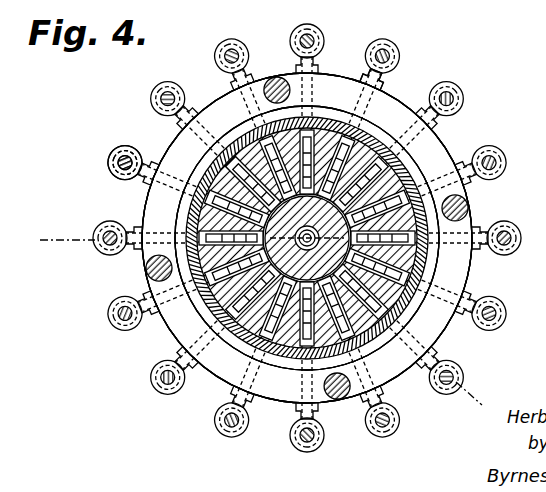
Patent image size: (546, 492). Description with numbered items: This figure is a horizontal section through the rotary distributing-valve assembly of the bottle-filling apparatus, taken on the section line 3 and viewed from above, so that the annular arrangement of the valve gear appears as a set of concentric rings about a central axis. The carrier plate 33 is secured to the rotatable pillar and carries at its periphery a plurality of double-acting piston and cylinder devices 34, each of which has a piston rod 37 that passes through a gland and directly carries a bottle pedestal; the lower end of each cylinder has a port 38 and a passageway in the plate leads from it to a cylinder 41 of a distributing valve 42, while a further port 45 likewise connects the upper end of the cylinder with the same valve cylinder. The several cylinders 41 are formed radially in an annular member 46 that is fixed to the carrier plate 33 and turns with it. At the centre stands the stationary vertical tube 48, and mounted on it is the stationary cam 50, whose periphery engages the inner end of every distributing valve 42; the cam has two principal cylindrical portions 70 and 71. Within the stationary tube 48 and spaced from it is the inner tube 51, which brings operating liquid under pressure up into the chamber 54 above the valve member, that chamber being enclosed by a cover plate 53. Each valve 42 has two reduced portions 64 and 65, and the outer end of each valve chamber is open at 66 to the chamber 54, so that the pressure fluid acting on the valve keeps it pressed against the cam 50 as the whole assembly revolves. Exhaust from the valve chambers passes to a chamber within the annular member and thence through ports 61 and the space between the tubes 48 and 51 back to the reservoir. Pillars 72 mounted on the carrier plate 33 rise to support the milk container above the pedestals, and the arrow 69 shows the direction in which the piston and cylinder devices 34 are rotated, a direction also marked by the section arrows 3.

The section line 3- 3 is at (44, 225).
The carrier plate 33 is at (129, 328).
The double-acting piston and cylinder devices 34 is at (446, 88).
The piston rod 37 is at (167, 96).
The port 38 is at (141, 186).
The cylinder of distributing valve 41 is at (166, 306).
The distributing valve 42 is at (250, 153).
The port 45 is at (205, 218).
The annular member 46 is at (433, 329).
The stationary vertical tube 48 is at (377, 148).
The stationary cam 50 is at (403, 167).
The inner tube 51 is at (202, 344).
The cover plate 53 is at (222, 380).
The chamber 54 is at (342, 398).
The ports 61 is at (432, 260).
The reduced portion 64 is at (222, 173).
The reduced portion 65 is at (238, 132).
The open end 66 is at (147, 270).
The arrow 69 is at (413, 404).
The cylindrical portion of cam 70 is at (322, 140).
The cylindrical portion of cam 71 is at (268, 353).
The pillars 72 is at (271, 77).